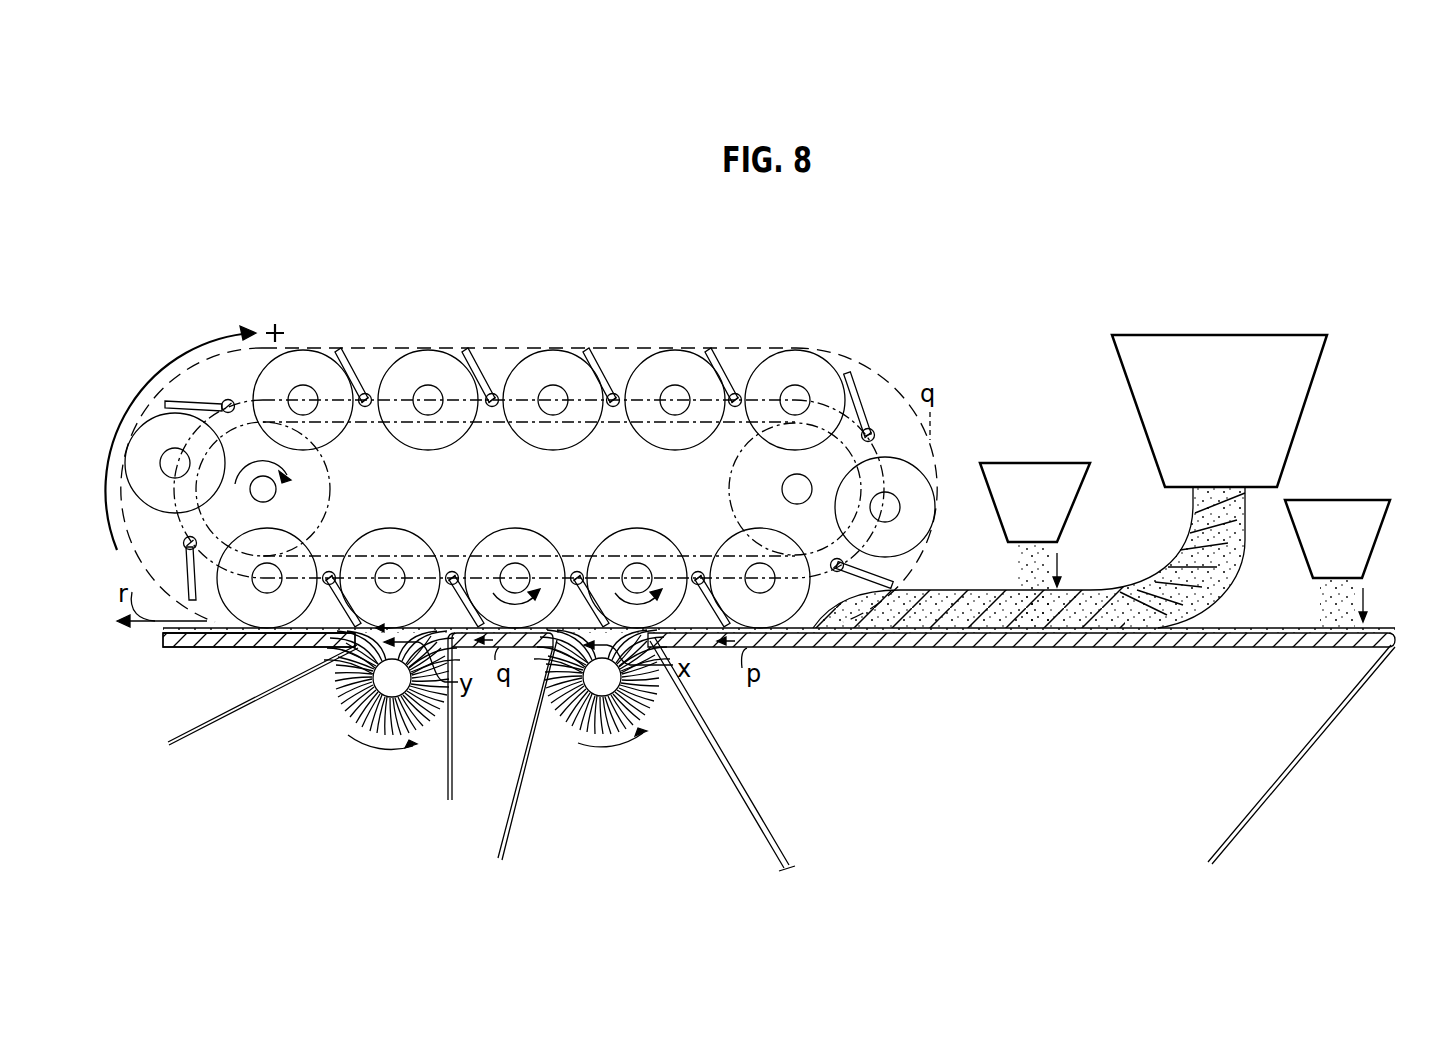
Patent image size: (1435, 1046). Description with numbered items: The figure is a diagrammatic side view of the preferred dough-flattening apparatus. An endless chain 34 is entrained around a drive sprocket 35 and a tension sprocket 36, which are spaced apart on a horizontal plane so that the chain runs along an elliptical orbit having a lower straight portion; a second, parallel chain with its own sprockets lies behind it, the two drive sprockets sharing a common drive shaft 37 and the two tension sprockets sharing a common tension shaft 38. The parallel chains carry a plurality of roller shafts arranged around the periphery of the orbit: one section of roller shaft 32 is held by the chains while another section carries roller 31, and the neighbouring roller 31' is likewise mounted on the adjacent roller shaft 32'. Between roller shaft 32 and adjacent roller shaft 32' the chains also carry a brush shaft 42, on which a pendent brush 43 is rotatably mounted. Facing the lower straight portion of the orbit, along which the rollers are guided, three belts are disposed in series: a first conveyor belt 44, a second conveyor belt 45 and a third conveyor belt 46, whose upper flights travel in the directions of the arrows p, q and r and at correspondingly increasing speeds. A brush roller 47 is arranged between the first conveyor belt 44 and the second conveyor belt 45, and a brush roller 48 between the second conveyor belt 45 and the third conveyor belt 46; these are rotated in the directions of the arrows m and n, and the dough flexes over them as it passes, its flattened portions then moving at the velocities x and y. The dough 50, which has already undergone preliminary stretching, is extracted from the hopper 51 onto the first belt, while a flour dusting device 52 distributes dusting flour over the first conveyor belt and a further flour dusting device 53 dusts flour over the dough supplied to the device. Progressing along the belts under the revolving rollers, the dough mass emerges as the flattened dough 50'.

The roller 31 is at (675, 378).
The roller 31' is at (553, 375).
The roller shaft 32 is at (667, 385).
The adjacent roller shaft 32' is at (544, 386).
The endless chain 34 is at (502, 424).
The drive sprocket 35 is at (337, 473).
The tension sprocket 36 is at (738, 457).
The drive shaft 37 is at (277, 495).
The tension shaft 38 is at (782, 490).
The brush shaft 42 is at (494, 396).
The pendent brush 43 is at (473, 357).
The first conveyor belt 44 is at (863, 632).
The second conveyor belt 45 is at (542, 648).
The third conveyor belt 46 is at (222, 645).
The brush roller 47 is at (578, 724).
The brush roller 48 is at (367, 717).
The dough 50 is at (1029, 558).
The flattened dough 50' is at (245, 659).
The hopper 51 is at (1248, 352).
The flour dusting device 52 is at (1353, 522).
The flour dusting device 53 is at (1013, 480).